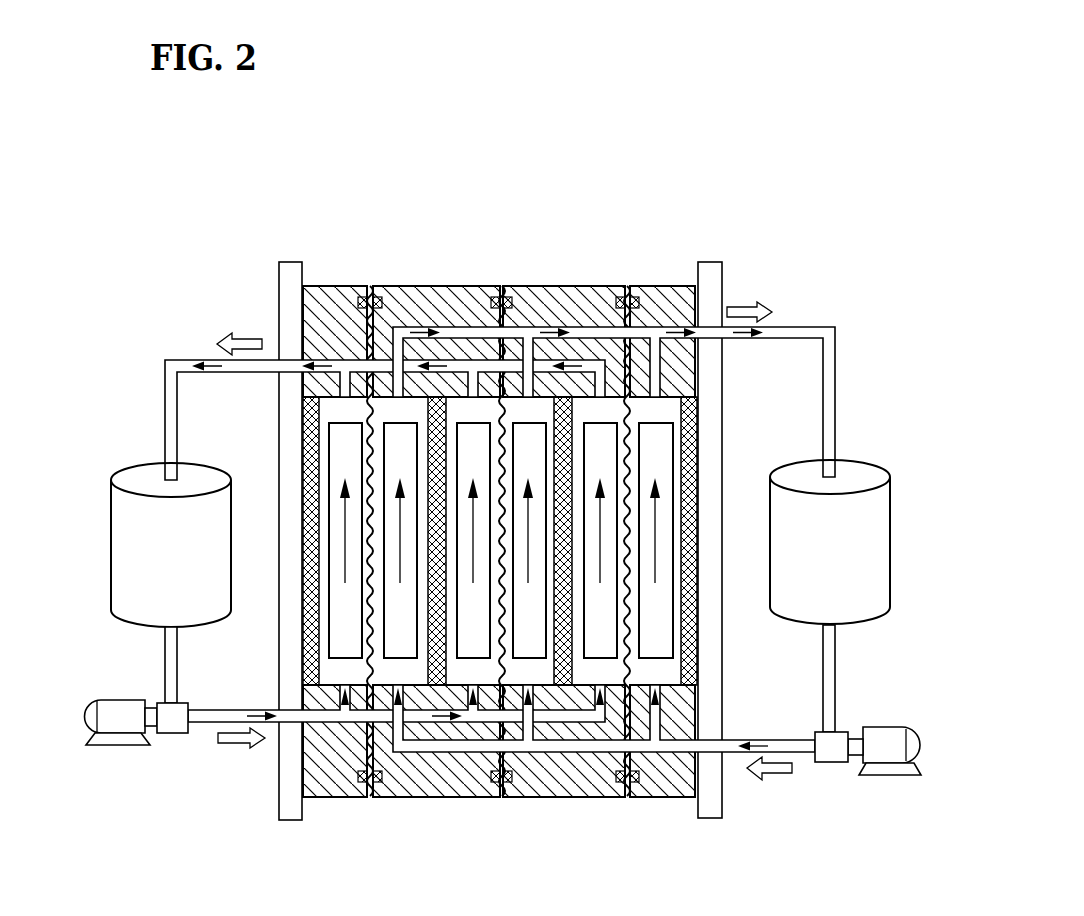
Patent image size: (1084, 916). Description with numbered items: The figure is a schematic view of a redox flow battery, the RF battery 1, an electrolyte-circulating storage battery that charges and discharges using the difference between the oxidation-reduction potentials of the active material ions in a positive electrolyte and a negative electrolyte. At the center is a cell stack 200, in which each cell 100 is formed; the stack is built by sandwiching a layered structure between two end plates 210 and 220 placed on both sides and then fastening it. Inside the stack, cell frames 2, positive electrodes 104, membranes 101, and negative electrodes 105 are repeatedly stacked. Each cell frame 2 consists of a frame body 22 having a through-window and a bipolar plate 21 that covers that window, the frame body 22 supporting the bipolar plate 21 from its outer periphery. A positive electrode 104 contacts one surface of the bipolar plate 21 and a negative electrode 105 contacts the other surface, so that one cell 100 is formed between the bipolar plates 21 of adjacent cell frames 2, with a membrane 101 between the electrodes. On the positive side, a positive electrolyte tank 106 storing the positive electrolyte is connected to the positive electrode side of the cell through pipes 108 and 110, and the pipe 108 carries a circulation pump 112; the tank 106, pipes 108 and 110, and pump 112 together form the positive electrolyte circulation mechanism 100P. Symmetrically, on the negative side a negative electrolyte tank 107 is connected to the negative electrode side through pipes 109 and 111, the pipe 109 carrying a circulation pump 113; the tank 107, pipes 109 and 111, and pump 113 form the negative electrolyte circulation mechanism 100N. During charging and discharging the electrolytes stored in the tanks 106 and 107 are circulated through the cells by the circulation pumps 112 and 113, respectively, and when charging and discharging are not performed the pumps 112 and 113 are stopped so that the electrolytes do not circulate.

The RF battery 1 is at (150, 172).
The cell stack 200 is at (595, 230).
The cell frame 2 is at (495, 493).
The frame body 22 is at (321, 287).
The bipolar plate 21 is at (305, 434).
The cell 100 is at (504, 582).
The membrane 101 is at (375, 660).
The positive electrode 104 is at (467, 617).
The negative electrode 105 is at (397, 632).
The positive electrolyte tank 106 is at (126, 468).
The negative electrolyte tank 107 is at (872, 468).
The pipe 108 is at (207, 722).
The pipe 109 is at (797, 752).
The pipe 110 is at (170, 356).
The pipe 111 is at (819, 327).
The circulation pump 112 is at (106, 705).
The circulation pump 113 is at (888, 729).
The positive electrolyte circulation mechanism 100P is at (342, 553).
The negative electrolyte circulation mechanism 100N is at (657, 548).
The end plate 220 is at (290, 804).
The end plate 210 is at (716, 805).